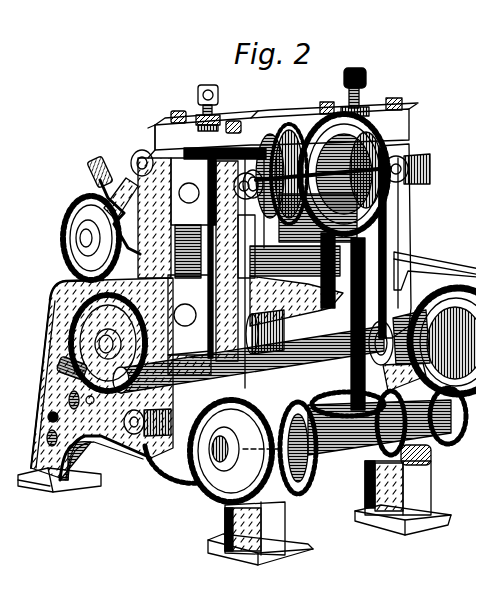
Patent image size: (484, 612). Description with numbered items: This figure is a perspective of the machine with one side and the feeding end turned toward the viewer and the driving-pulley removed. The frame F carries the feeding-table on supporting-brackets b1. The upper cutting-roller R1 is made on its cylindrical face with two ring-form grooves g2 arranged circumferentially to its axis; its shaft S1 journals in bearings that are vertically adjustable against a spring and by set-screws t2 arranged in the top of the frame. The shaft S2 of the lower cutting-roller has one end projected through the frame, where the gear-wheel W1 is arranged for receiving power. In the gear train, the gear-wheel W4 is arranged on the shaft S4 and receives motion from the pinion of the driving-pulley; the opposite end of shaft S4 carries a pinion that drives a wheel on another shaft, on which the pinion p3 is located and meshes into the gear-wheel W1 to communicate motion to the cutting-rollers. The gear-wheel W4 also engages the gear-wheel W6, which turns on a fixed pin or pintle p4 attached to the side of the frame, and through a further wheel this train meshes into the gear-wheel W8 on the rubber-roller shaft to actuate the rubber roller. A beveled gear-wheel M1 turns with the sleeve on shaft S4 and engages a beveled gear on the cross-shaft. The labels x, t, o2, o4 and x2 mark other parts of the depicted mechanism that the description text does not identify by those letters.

The upper cutting-roller R1 is at (283, 128).
The set-screws t2 is at (210, 89).
The ring-form grooves g2 is at (302, 114).
The frame F is at (402, 220).
The supporting-brackets b1 is at (448, 262).
The gear wheel x is at (448, 406).
The main shaft t is at (248, 351).
The upper cutting-roller shaft S1 is at (217, 273).
The lower cutting-roller shaft S2 is at (189, 325).
The gear-wheel on the rubber-roller shaft W8 is at (108, 215).
The opening o2 is at (59, 424).
The opening o4 is at (92, 404).
The gear-wheel W1 is at (108, 343).
The pinion p3 is at (108, 338).
The fixed pin or pintle p4 is at (147, 434).
The gear-wheel W6 is at (240, 448).
The gear-wheel W4 is at (231, 451).
The hub x2 is at (224, 449).
The shaft S4 is at (251, 472).
The beveled gear-wheel M1 is at (387, 461).